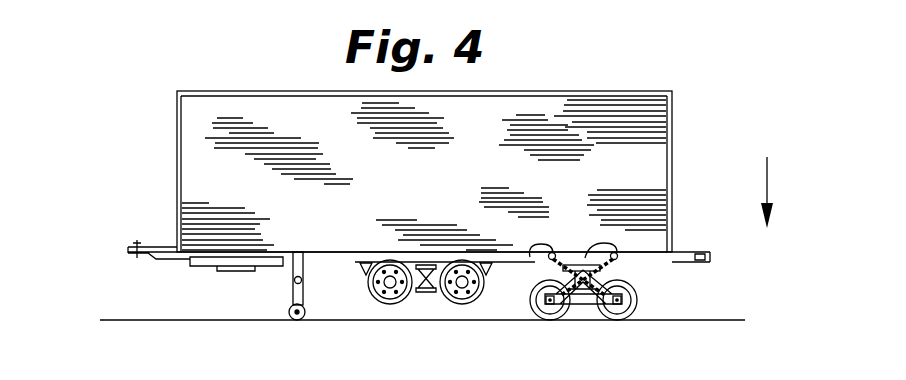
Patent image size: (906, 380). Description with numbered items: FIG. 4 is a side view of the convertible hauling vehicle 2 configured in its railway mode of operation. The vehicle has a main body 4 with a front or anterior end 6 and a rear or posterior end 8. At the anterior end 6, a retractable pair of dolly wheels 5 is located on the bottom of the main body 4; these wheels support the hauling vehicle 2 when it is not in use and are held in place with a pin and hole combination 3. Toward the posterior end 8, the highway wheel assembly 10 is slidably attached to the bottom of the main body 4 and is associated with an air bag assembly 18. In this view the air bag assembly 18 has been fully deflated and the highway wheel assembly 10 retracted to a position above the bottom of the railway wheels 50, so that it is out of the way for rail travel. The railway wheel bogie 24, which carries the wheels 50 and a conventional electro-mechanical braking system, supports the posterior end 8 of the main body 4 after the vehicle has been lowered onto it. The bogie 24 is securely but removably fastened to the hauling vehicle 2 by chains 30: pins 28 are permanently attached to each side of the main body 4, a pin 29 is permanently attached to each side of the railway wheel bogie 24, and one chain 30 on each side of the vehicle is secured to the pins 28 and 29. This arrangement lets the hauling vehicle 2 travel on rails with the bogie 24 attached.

The hauling vehicle 2 is at (563, 83).
The pin and hole combination 3 is at (303, 272).
The main body 4 is at (232, 84).
The dolly wheels 5 is at (302, 320).
The anterior end 6 is at (177, 122).
The posterior end 8 is at (672, 148).
The highway wheel assembly 10 is at (398, 303).
The air bag assembly 18 is at (430, 292).
The railway wheel bogie 24 is at (650, 318).
The pins 28 is at (538, 258).
The pins 29 is at (585, 305).
The chains 30 is at (620, 278).
The wheels 50 is at (537, 312).